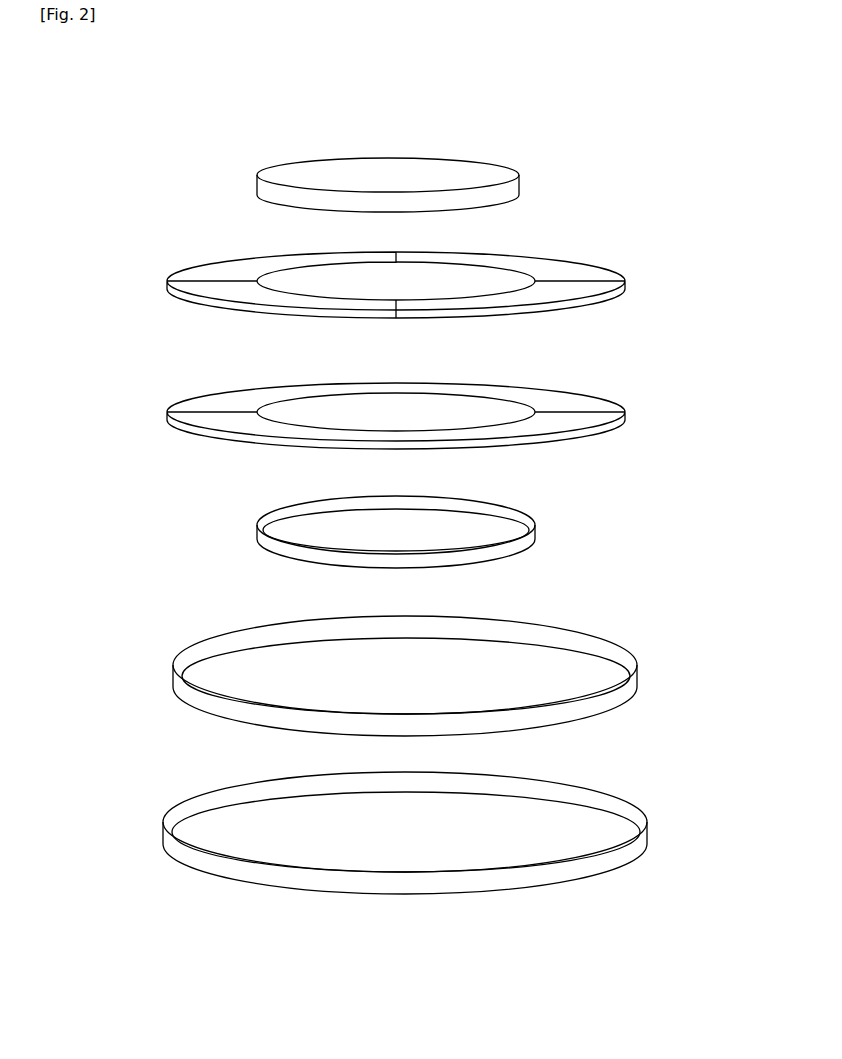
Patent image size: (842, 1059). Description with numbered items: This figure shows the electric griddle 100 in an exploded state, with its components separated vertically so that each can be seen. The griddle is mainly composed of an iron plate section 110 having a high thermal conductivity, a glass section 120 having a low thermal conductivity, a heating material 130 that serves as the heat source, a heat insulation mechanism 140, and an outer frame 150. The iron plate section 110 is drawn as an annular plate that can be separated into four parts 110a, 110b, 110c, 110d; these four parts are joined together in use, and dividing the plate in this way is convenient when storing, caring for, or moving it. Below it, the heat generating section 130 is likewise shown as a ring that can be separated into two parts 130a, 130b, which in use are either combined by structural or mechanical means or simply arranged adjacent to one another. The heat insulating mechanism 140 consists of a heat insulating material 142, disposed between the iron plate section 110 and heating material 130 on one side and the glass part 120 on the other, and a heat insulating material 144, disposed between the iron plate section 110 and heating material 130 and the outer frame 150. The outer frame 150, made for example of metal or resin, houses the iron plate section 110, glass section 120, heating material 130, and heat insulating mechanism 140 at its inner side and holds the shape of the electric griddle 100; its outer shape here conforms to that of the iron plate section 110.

The electric griddle 100 is at (404, 64).
The iron plate section 110 is at (715, 205).
The first part of the iron plate section 110a is at (255, 263).
The second part of the iron plate section 110b is at (557, 270).
The third part of the iron plate section 110c is at (546, 294).
The fourth part of the iron plate section 110d is at (250, 296).
The glass section 120 is at (488, 173).
The heating material 130 is at (723, 387).
The first part of the heat generating section 130a is at (576, 402).
The second part of the heat generating section 130b is at (561, 424).
The heat insulation mechanism 140 is at (667, 533).
The heat insulating material 142 is at (533, 527).
The heat insulating material 144 is at (600, 652).
The outer frame 150 is at (628, 814).